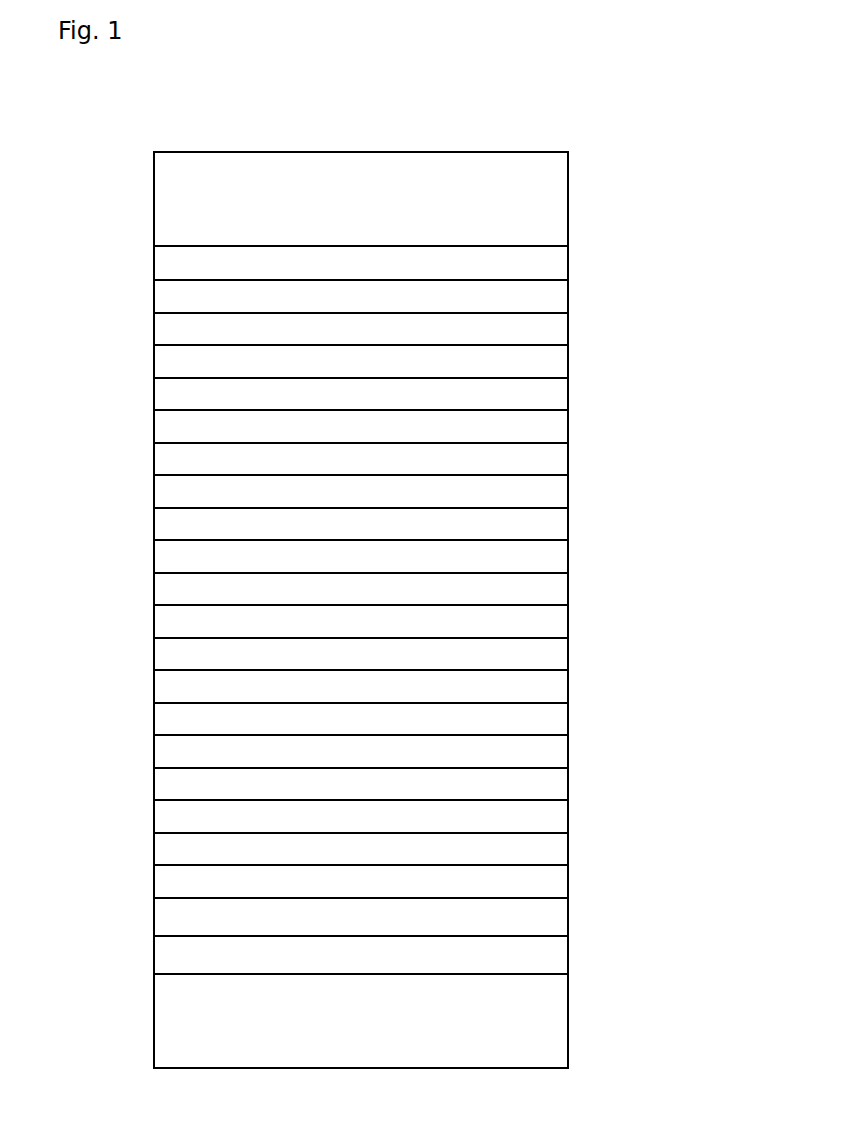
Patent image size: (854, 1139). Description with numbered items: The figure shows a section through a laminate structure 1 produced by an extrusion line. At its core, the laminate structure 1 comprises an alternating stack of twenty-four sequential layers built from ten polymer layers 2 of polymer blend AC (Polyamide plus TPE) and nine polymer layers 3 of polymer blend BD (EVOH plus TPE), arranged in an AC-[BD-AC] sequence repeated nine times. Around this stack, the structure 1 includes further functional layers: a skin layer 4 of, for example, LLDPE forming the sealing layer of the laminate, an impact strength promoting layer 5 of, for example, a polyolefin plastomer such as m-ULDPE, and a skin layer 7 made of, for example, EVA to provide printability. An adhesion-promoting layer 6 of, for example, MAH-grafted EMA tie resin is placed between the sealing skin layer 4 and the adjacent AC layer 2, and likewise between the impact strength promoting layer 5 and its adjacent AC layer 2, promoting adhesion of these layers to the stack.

The laminate structure 1 is at (144, 128).
The polymer layers 2 is at (568, 488).
The polymer layers 3 is at (568, 393).
The skin layer 4 is at (568, 208).
The impact strength promoting layer 5 is at (568, 960).
The adhesion-promoting layer 6 is at (568, 263).
The skin layer 7 is at (568, 1038).